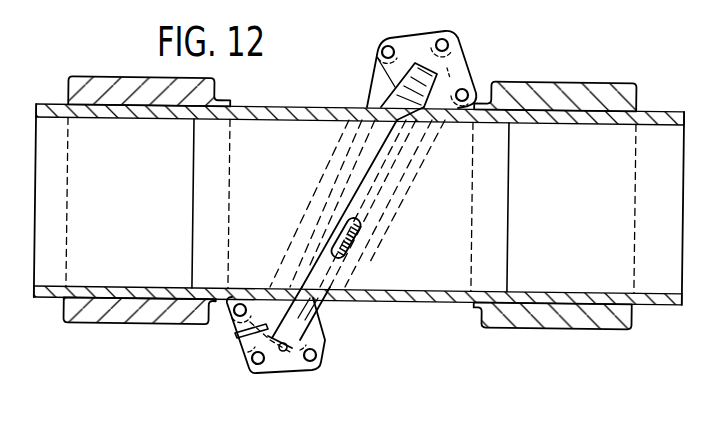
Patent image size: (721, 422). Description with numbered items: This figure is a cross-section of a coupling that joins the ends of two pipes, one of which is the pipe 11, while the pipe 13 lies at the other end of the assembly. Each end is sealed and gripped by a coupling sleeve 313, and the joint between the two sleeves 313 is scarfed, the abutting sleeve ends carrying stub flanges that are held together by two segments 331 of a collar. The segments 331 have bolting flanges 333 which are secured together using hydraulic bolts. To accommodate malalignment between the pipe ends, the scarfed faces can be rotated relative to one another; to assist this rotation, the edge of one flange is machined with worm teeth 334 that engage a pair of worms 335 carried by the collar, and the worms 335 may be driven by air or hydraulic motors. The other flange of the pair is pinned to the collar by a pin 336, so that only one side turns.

The pipe 11 is at (47, 104).
The second pipe section 13 is at (656, 106).
The coupling sleeve 313 is at (266, 105).
The segment of the collar 331 is at (322, 300).
The bolting flange 333 is at (466, 52).
The worm teeth 334 is at (357, 241).
The worm 335 is at (322, 344).
The pin 336 is at (238, 331).